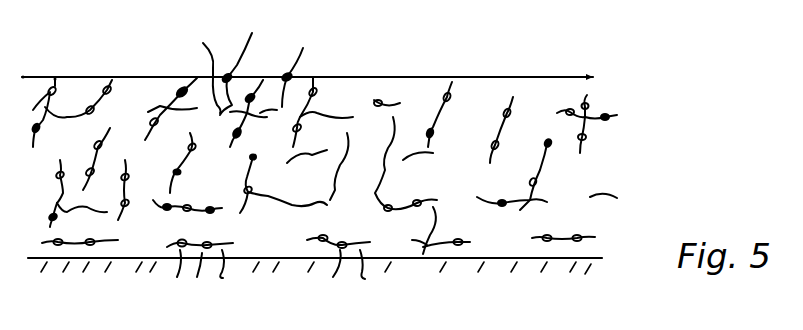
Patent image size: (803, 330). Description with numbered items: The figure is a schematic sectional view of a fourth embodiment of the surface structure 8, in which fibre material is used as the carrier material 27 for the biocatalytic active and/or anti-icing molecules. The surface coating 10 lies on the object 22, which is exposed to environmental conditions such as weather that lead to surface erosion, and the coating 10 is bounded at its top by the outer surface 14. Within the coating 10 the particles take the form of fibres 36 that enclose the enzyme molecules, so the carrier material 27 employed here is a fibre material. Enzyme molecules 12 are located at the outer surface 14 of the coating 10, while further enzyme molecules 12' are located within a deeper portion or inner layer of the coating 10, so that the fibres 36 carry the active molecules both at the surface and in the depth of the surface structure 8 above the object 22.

The surface structure 8 is at (641, 129).
The surface coating 10 is at (617, 175).
The enzyme molecules 12 is at (275, 62).
The enzyme molecules 12' is at (263, 284).
The outer surface 14 is at (435, 78).
The object 22 is at (421, 272).
The carrier material 27 is at (446, 110).
The fibres 36 is at (284, 158).